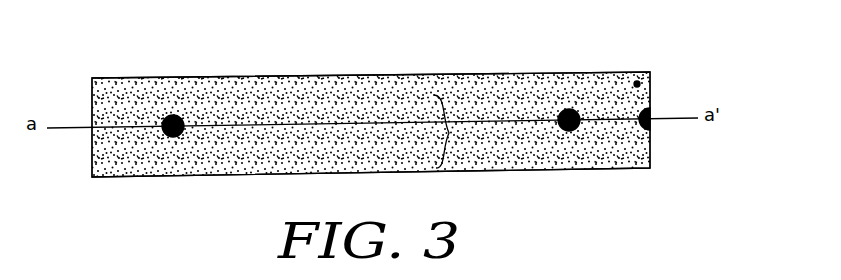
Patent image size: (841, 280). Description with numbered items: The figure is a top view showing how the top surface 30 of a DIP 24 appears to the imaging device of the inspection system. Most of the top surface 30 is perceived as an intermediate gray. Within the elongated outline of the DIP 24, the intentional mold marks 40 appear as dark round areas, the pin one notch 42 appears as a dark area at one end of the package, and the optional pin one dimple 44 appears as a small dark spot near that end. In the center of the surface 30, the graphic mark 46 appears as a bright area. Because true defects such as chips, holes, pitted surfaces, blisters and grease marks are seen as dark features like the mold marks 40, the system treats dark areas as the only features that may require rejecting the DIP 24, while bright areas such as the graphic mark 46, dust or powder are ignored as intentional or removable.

The DIP 24 is at (598, 58).
The top surface 30 is at (523, 107).
The mold marks 40 is at (175, 137).
The pin one notch 42 is at (652, 125).
The pin one dimple 44 is at (640, 85).
The graphic mark 46 is at (449, 134).